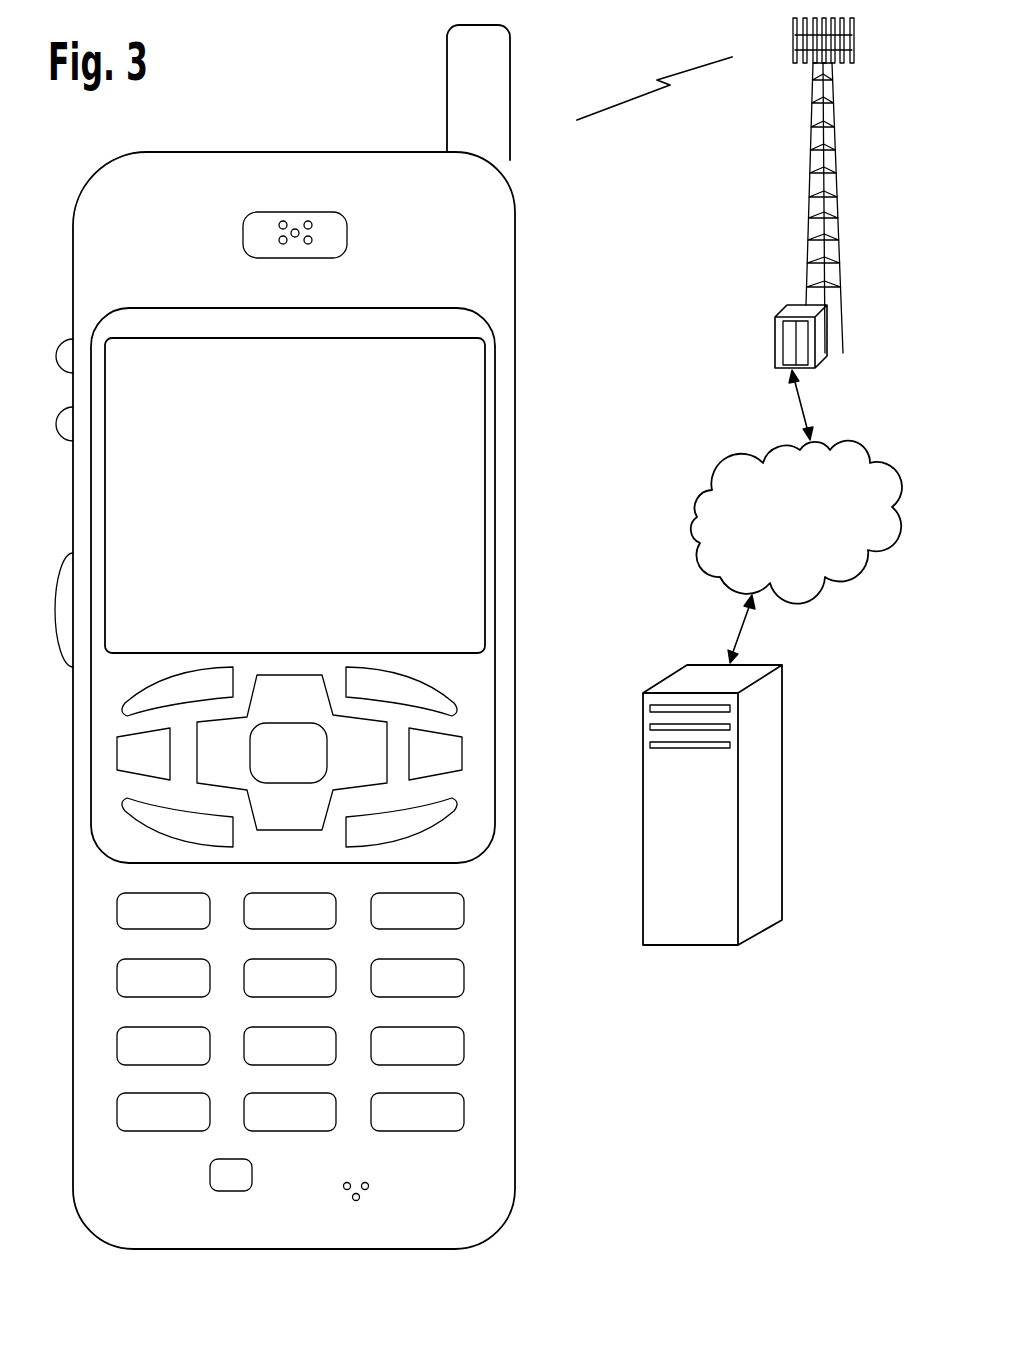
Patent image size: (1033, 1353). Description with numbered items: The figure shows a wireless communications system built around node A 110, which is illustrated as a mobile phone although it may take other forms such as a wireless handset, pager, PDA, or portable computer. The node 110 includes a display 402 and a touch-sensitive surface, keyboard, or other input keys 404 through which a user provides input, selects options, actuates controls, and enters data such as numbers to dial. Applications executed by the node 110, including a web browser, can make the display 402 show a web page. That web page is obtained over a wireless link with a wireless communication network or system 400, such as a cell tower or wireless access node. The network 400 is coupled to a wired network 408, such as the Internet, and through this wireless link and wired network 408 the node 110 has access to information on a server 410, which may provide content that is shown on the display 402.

The node A 110 is at (324, 654).
The wireless communication network or system 400 is at (808, 207).
The display 402 is at (487, 353).
The input keys 404 is at (527, 665).
The wired network 408 is at (704, 570).
The server 410 is at (688, 945).